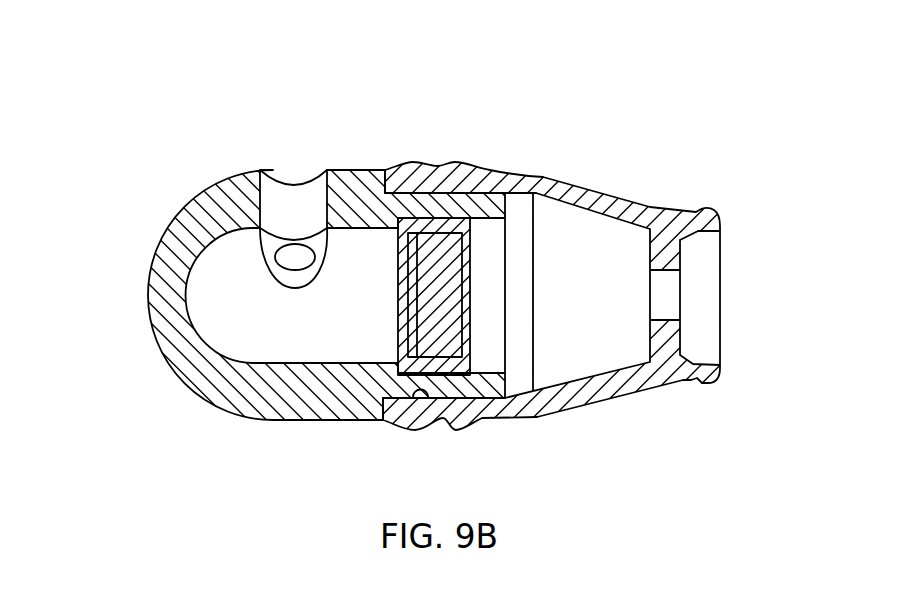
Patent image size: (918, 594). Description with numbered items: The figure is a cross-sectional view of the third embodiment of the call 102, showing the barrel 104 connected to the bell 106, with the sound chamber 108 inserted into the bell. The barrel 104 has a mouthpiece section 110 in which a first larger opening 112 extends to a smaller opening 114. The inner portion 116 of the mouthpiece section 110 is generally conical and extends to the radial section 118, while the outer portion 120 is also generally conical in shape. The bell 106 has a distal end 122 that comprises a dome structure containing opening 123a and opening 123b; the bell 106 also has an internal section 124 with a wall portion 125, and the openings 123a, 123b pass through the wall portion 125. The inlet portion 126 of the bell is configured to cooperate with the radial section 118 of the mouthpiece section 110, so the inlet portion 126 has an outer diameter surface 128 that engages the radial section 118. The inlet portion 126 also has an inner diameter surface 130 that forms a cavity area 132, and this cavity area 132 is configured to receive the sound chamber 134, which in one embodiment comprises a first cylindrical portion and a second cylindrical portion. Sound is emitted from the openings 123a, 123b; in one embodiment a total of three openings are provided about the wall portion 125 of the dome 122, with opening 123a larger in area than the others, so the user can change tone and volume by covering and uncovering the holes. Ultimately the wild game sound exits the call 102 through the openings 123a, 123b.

The call 102 is at (613, 93).
The barrel 104 is at (653, 215).
The bell 106 is at (232, 183).
The sound chamber 108 is at (453, 227).
The mouthpiece section 110 is at (722, 380).
The first larger opening 112 is at (697, 230).
The smaller opening 114 is at (662, 273).
The inner portion 116 is at (605, 366).
The radial section 118 is at (422, 394).
The outer portion 120 is at (597, 192).
The distal end 122 is at (148, 278).
The opening 123a is at (293, 203).
The opening 123b is at (291, 257).
The internal section 124 is at (315, 363).
The wall portion 125 is at (292, 424).
The inlet portion 126 is at (428, 222).
The outer diameter surface 128 is at (435, 187).
The inner diameter surface 130 is at (450, 357).
The cavity area 132 is at (482, 361).
The sound chamber 134 is at (465, 367).